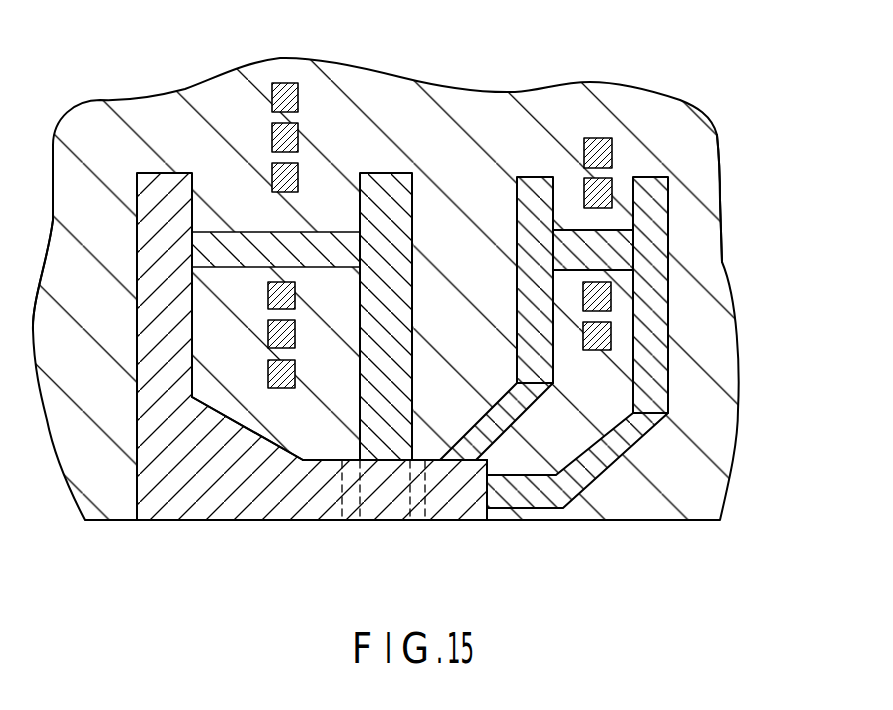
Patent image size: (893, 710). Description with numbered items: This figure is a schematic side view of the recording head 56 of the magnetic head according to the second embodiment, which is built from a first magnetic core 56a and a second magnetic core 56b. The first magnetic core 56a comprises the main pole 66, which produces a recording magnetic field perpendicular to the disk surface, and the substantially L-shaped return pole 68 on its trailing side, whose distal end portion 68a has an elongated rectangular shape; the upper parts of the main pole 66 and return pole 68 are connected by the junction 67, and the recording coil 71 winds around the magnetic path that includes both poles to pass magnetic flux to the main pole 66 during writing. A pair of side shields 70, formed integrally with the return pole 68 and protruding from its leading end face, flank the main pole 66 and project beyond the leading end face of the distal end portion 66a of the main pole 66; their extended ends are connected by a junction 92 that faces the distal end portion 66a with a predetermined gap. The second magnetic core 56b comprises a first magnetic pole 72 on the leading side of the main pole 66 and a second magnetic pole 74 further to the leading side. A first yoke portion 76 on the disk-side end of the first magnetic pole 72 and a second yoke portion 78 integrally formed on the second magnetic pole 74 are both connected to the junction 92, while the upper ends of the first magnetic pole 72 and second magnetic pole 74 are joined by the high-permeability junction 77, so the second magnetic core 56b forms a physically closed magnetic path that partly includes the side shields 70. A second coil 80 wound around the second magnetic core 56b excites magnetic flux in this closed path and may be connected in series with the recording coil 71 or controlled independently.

The recording head 56 is at (390, 95).
The first magnetic core 56a is at (145, 110).
The second magnetic core 56b is at (672, 145).
The main pole 66 is at (400, 308).
The distal end portion of the main pole 66a is at (388, 520).
The junction 67 is at (227, 254).
The return pole 68 is at (148, 333).
The distal end portion of the return pole 68a is at (278, 500).
The side shields 70 is at (324, 458).
The recording coil 71 is at (299, 97).
The first magnetic pole 72 is at (518, 204).
The second magnetic pole 74 is at (660, 197).
The first yoke portion 76 is at (500, 413).
The junction 77 is at (607, 254).
The second yoke portion 78 is at (548, 510).
The second coil 80 is at (595, 138).
The junction 92 is at (462, 520).